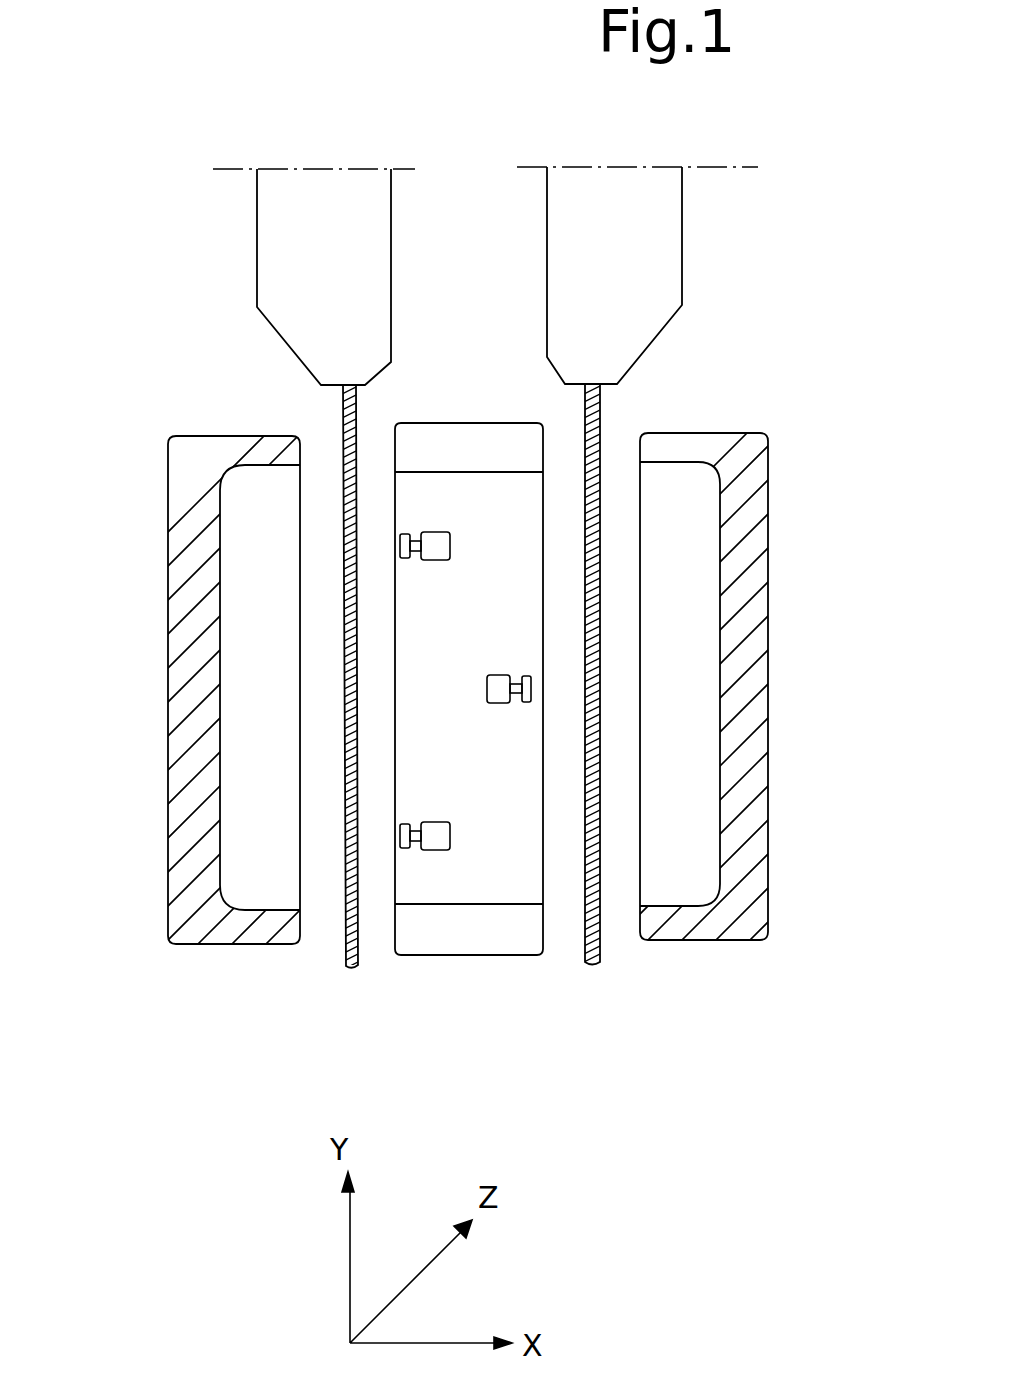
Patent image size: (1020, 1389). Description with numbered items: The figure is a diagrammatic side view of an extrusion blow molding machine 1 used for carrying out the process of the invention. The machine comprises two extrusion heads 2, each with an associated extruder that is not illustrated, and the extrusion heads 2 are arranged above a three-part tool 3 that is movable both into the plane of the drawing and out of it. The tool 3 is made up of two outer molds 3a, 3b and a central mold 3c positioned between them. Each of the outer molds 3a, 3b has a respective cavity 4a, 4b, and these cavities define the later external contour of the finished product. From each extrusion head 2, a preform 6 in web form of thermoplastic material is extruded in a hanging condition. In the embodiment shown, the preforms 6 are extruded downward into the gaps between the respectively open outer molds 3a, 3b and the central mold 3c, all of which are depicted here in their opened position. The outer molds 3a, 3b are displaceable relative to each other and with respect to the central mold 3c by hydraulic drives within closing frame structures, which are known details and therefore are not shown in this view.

The extrusion blow molding machine 1 is at (137, 853).
The extrusion head 2 is at (272, 258).
The tool 3 is at (474, 747).
The outer mold 3a is at (200, 772).
The outer mold 3b is at (714, 772).
The central mold 3c is at (455, 440).
The cavity 4a is at (278, 728).
The cavity 4b is at (700, 728).
The preform 6 is at (352, 967).